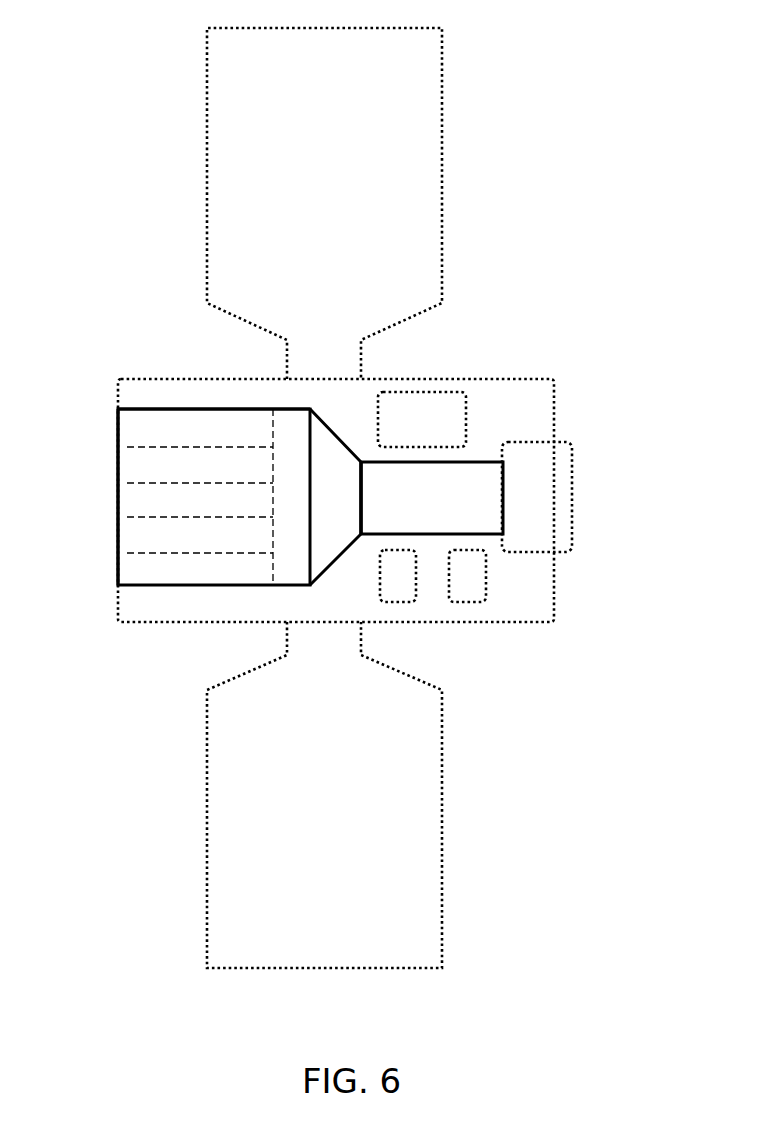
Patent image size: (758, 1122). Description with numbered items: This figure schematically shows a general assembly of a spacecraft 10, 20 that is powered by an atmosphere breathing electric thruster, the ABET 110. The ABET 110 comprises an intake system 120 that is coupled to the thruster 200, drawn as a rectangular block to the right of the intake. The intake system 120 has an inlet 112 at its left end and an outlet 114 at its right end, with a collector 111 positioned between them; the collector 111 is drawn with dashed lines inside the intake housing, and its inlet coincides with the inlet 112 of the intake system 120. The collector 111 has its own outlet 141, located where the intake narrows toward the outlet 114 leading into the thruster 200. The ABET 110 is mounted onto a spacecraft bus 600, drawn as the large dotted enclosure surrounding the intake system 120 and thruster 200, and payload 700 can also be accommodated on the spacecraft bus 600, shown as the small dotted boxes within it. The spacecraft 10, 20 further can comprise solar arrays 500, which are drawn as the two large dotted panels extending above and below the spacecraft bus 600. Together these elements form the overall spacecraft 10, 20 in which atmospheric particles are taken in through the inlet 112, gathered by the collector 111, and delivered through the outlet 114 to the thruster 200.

The spacecraft 10 is at (353, 498).
The spacecraft 20 is at (333, 498).
The atmosphere breathing electric thruster ABET 110 is at (148, 603).
The collector 111 is at (140, 502).
The inlet 112 is at (118, 537).
The outlet 114 is at (361, 513).
The intake system 120 is at (167, 408).
The outlet 141 is at (308, 438).
The thruster 200 is at (409, 495).
The solar arrays 500 is at (443, 117).
The spacecraft bus 600 is at (472, 378).
The payload 700 is at (484, 583).